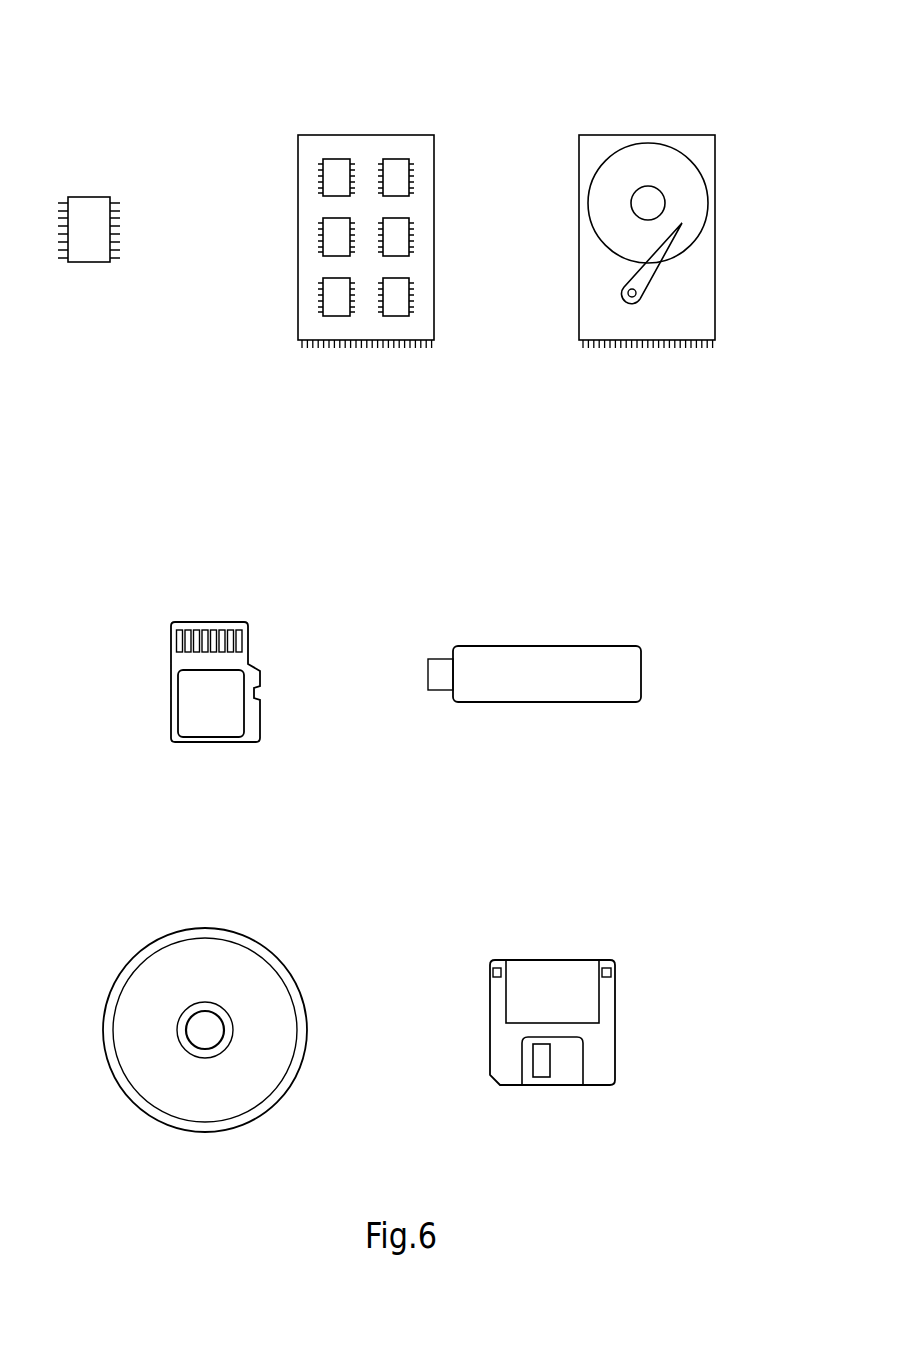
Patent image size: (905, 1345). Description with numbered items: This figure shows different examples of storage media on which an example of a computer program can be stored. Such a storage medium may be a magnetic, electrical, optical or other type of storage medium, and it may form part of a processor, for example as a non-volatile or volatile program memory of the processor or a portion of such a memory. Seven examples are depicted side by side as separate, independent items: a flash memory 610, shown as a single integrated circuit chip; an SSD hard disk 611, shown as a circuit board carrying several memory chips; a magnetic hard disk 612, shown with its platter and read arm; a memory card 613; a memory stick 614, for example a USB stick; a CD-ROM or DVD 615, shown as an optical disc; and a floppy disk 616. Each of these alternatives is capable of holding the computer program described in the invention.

The flash memory 610 is at (113, 158).
The SSD hard disk 611 is at (435, 98).
The magnetic hard disk 612 is at (718, 98).
The memory card 613 is at (250, 590).
The memory stick 614 is at (615, 610).
The CD-ROM or DVD 615 is at (288, 923).
The floppy disk 616 is at (608, 923).